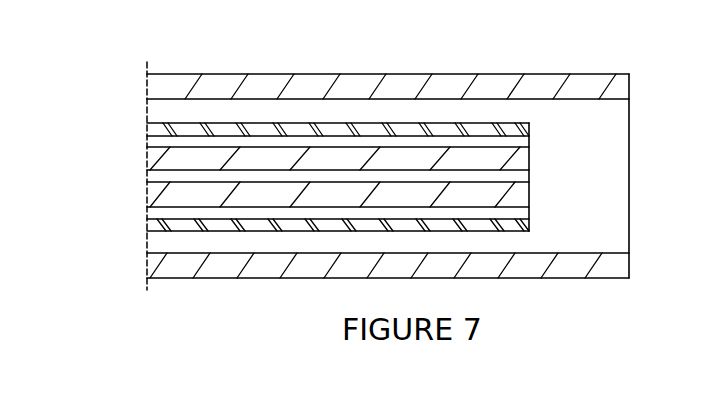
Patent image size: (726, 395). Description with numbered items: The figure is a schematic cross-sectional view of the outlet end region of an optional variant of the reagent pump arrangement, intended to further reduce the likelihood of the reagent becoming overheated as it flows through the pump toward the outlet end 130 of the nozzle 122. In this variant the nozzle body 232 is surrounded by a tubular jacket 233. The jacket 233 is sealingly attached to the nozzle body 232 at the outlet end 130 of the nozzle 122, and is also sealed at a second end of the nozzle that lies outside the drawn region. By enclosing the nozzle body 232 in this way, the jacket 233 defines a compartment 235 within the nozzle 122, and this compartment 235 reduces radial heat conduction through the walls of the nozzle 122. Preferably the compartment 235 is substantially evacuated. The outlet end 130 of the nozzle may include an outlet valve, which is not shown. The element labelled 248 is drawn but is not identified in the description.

The nozzle 122 is at (313, 123).
The tubular jacket 233 is at (440, 128).
The outlet end 130 is at (427, 180).
The nozzle body 232 is at (245, 200).
The compartment 235 is at (187, 213).
The outer plate 248 is at (562, 270).